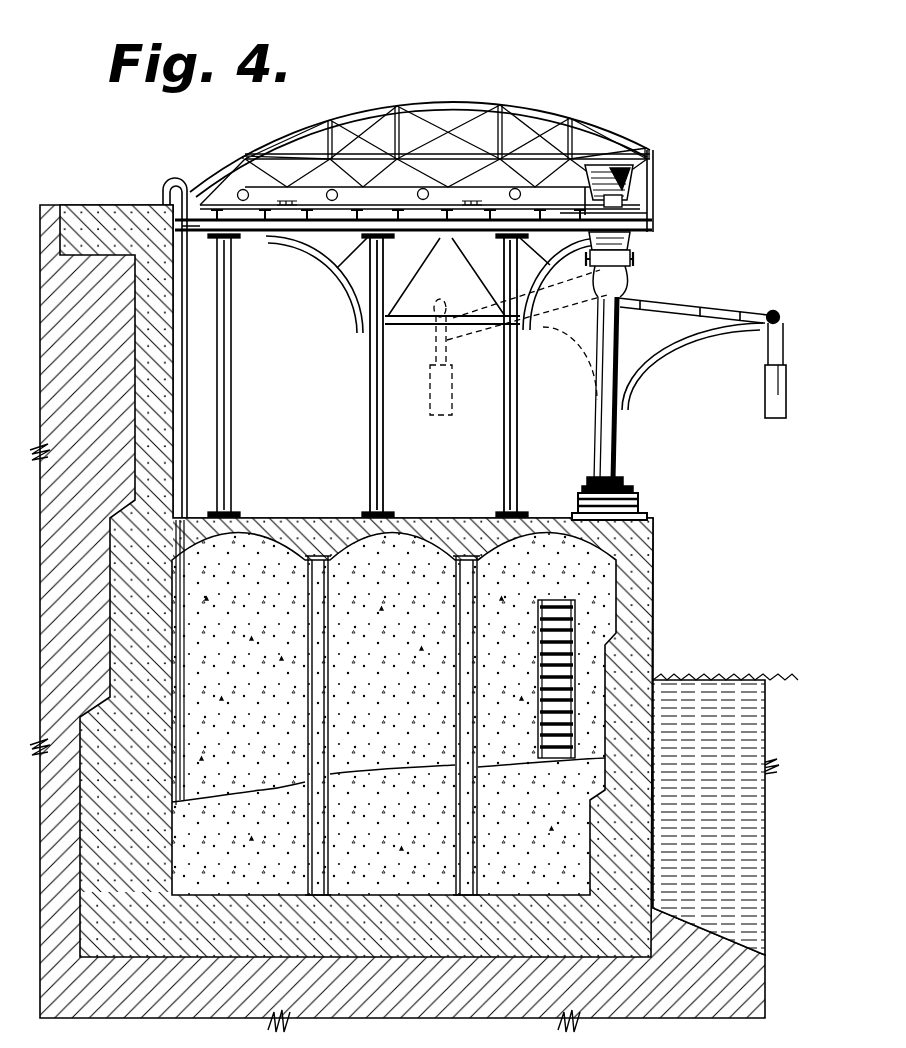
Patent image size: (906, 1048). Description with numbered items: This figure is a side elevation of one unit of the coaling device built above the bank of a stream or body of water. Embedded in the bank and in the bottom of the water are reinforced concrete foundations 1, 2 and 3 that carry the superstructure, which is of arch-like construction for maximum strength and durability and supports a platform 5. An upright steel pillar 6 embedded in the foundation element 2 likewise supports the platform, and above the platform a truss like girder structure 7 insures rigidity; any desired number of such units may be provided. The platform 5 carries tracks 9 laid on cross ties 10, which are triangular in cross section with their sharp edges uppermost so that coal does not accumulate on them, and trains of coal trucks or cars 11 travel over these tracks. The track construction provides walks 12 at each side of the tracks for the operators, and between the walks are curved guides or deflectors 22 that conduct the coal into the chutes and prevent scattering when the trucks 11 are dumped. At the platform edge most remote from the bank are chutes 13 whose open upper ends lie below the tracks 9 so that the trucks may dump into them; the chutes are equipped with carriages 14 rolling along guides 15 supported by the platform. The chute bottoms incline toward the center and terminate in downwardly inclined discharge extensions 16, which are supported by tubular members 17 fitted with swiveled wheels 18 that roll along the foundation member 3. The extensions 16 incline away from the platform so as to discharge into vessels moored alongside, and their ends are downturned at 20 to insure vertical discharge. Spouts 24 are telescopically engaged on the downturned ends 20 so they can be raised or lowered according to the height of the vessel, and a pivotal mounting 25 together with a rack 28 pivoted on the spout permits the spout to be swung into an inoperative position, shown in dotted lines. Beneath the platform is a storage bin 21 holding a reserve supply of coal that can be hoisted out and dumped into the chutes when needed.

The reinforced concrete foundation 1 is at (112, 220).
The reinforced concrete foundation 2 is at (262, 895).
The reinforced concrete foundation 3 is at (304, 518).
The platform 5 is at (238, 208).
The upright steel pillar 6 is at (370, 394).
The truss like girder structure 7 is at (317, 120).
The tracks 9 is at (357, 205).
The cross ties 10 is at (525, 206).
The coal trucks or cars 11 is at (635, 178).
The walks 12 is at (290, 205).
The chutes 13 is at (648, 283).
The carriages 14 is at (622, 237).
The guides 15 is at (650, 517).
The discharge extensions 16 is at (702, 310).
The tubular members 17 is at (614, 433).
The swiveled wheels 18 is at (578, 502).
The downturned ends 20 is at (783, 347).
The storage bin 21 is at (388, 723).
The guides or deflectors 22 is at (624, 203).
The spouts 24 is at (767, 397).
The pivotal mounting 25 is at (634, 492).
The rack 28 is at (622, 484).